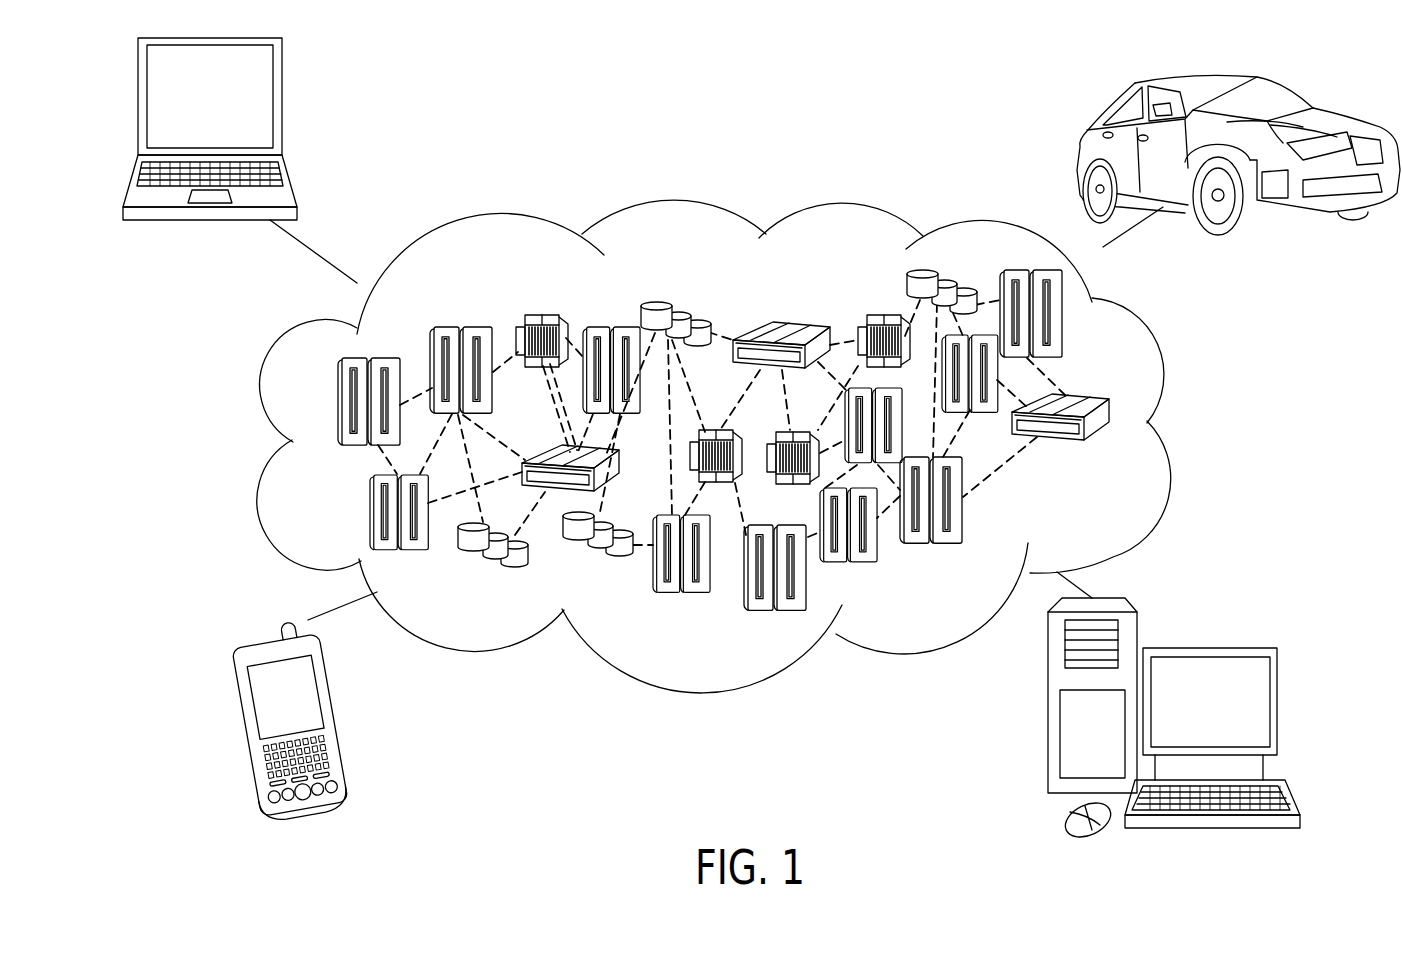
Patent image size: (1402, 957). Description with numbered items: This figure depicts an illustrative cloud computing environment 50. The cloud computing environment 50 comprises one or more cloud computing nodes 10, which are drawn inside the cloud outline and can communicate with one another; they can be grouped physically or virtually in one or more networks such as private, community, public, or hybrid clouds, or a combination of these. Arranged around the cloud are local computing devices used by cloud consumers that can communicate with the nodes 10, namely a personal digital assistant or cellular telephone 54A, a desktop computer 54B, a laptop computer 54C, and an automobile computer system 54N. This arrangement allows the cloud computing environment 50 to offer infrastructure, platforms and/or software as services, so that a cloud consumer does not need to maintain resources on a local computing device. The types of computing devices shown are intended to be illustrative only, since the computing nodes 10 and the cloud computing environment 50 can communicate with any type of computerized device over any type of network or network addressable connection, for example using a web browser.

The cloud computing nodes 10 is at (1128, 453).
The cloud computing environment 50 is at (1163, 397).
The personal digital assistant (PDA) or cellular telephone 54A is at (238, 728).
The desktop computer 54B is at (1212, 648).
The laptop computer 54C is at (138, 102).
The automobile computer system 54N is at (1293, 95).